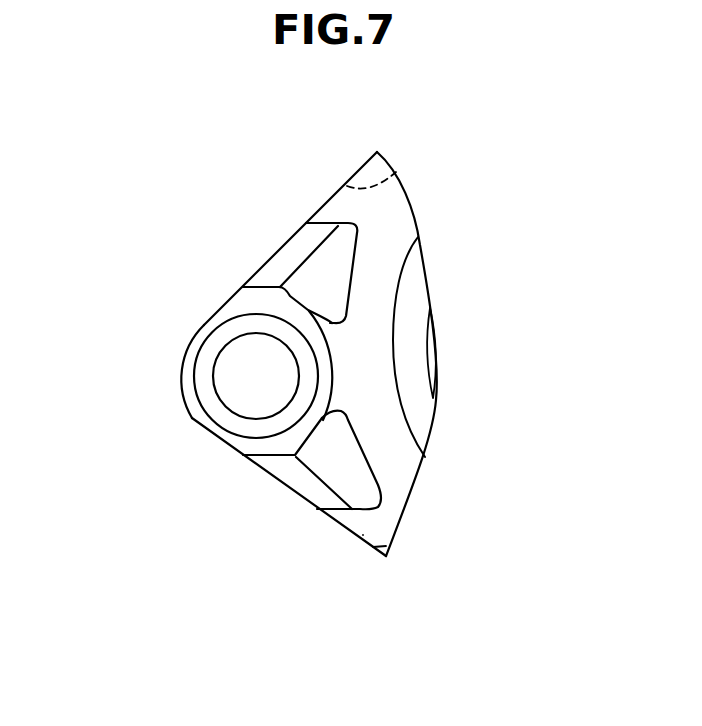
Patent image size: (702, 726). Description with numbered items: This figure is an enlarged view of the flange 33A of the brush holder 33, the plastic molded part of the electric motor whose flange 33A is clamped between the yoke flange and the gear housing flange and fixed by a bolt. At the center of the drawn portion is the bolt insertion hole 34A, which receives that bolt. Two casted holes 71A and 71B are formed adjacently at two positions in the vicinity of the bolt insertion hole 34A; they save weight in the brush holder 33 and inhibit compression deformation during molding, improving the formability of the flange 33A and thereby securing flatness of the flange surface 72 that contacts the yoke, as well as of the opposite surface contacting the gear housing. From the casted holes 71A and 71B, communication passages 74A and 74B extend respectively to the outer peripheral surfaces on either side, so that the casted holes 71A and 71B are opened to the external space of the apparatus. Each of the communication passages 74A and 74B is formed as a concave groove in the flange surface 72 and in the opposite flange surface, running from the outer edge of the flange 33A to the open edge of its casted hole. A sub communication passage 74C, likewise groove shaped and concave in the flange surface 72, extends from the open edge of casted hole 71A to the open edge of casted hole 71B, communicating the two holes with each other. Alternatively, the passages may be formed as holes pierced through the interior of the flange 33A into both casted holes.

The brush holder 33 is at (357, 166).
The flange 33A is at (192, 332).
The bolt insertion hole 34A is at (233, 387).
The flange surface 72 is at (241, 299).
The casted hole 71A is at (312, 283).
The casted hole 71B is at (317, 453).
The communication passage 74A is at (298, 249).
The communication passage 74B is at (305, 482).
The sub communication passage 74C is at (337, 353).